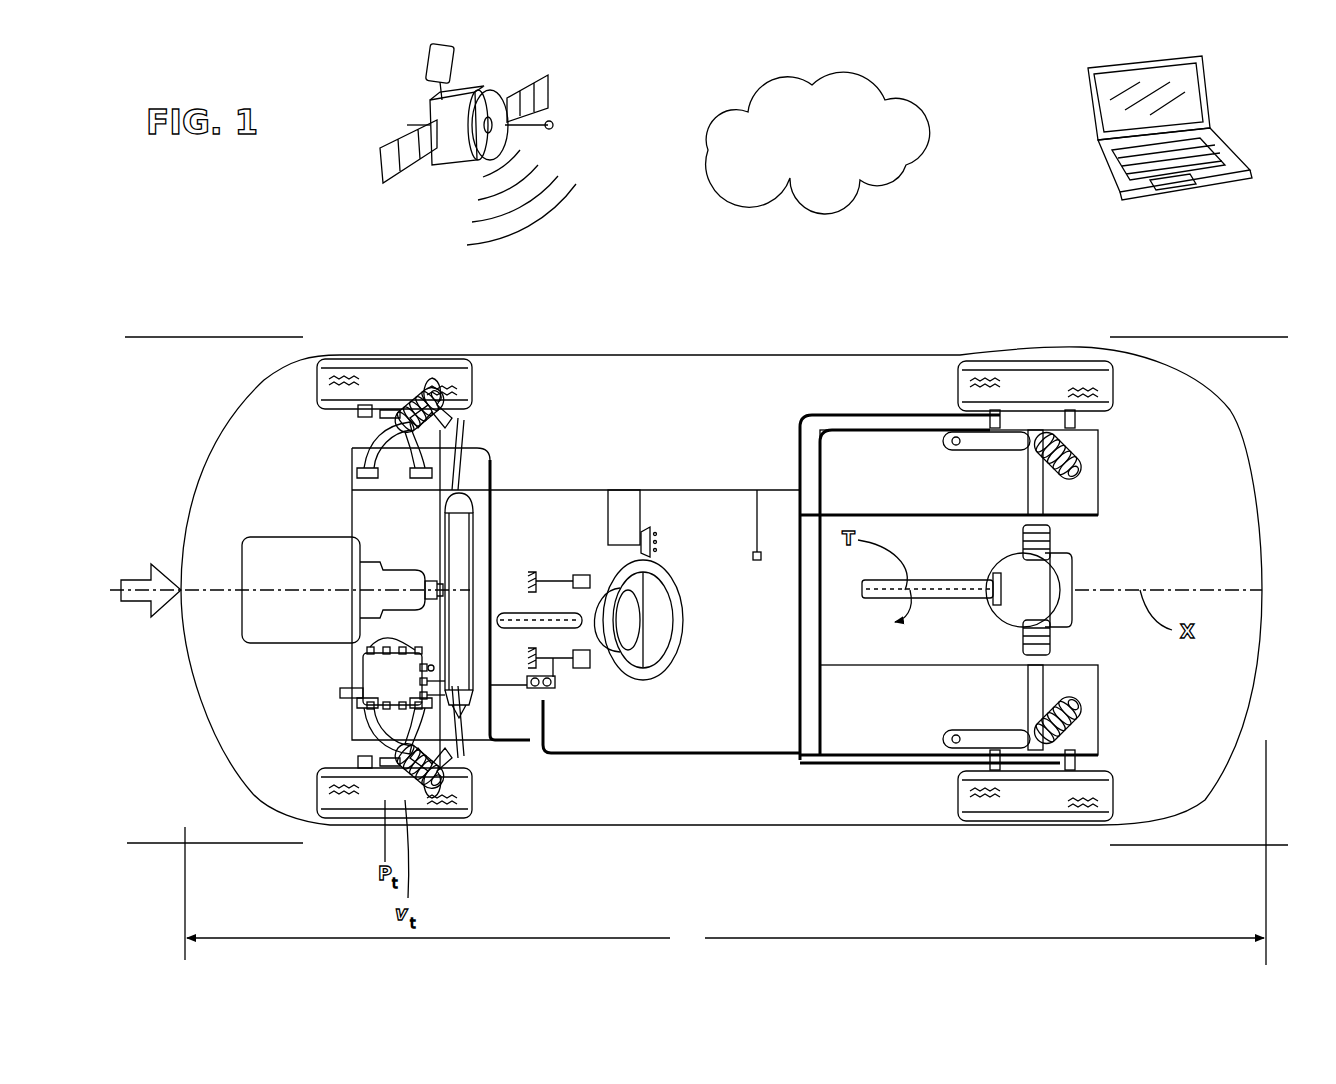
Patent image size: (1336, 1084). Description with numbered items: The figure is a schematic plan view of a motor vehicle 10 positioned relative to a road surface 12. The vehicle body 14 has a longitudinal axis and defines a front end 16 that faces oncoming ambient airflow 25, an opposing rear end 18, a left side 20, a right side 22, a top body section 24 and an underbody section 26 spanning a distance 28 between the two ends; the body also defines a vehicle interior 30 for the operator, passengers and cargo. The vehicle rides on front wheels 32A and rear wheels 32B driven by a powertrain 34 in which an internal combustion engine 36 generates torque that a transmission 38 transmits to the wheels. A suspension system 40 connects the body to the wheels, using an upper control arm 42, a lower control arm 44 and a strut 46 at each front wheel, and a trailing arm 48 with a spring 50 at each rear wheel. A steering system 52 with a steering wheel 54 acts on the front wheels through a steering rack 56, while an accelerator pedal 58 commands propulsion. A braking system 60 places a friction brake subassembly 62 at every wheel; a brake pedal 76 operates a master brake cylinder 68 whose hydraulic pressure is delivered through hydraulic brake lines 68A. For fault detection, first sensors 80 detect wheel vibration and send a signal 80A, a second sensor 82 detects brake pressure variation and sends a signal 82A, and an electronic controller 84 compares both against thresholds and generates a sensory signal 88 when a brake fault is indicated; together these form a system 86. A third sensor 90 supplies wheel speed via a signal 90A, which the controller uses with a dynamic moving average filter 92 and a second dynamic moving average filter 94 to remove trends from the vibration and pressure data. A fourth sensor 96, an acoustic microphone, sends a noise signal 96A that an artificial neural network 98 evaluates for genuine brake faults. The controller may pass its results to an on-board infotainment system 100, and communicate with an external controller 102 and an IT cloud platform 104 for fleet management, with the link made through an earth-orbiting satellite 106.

The motor vehicle 10 is at (1035, 280).
The road surface 12 is at (1284, 407).
The vehicle body 14 is at (808, 352).
The front end 16 is at (185, 512).
The rear end 18 is at (1262, 665).
The left side 20 is at (720, 826).
The right side 22 is at (702, 354).
The top body section 24 is at (803, 792).
The ambient airflow 25 is at (137, 582).
The underbody section 26 is at (213, 685).
The distance 28 is at (725, 852).
The vehicle interior 30 is at (695, 673).
The front wheels 32A is at (368, 356).
The rear wheels 32B is at (1055, 357).
The powertrain 34 is at (238, 607).
The internal combustion engine 36 is at (262, 580).
The transmission 38 is at (372, 570).
The vehicle suspension system 40 is at (515, 432).
The upper control arm 42 is at (458, 418).
The lower control arm 44 is at (492, 480).
The strut 46 is at (432, 380).
The trailing arm 48 is at (945, 440).
The spring 50 is at (1085, 470).
The vehicle steering system 52 is at (548, 580).
The steering wheel 54 is at (672, 568).
The steering rack 56 is at (480, 580).
The accelerator pedal 58 is at (640, 540).
The vehicle braking system 60 is at (372, 420).
The friction brake subassembly 62 is at (352, 426).
The master brake cylinder 68 is at (552, 689).
The hydraulic brake lines 68A is at (600, 754).
The brake pedal 76 is at (590, 665).
The first sensor 80 is at (208, 405).
The signal 80A is at (363, 665).
The second sensor 82 is at (530, 678).
The signal 82A is at (415, 668).
The electronic controller 84 is at (405, 689).
The system 86 is at (325, 673).
The sensory signal 88 is at (432, 584).
The third sensor 90 is at (462, 420).
The signal 90A is at (415, 650).
The dynamic moving average filter 92 is at (508, 614).
The dynamic moving average filter 94 is at (462, 697).
The fourth sensor 96 is at (755, 560).
The signal 96A is at (402, 647).
The artificial neural network 98 is at (340, 693).
The on-board infotainment system 100 is at (648, 540).
The external controller 102 is at (1210, 100).
The IT cloud platform 104 is at (905, 132).
The earth-orbiting satellite 106 is at (545, 100).